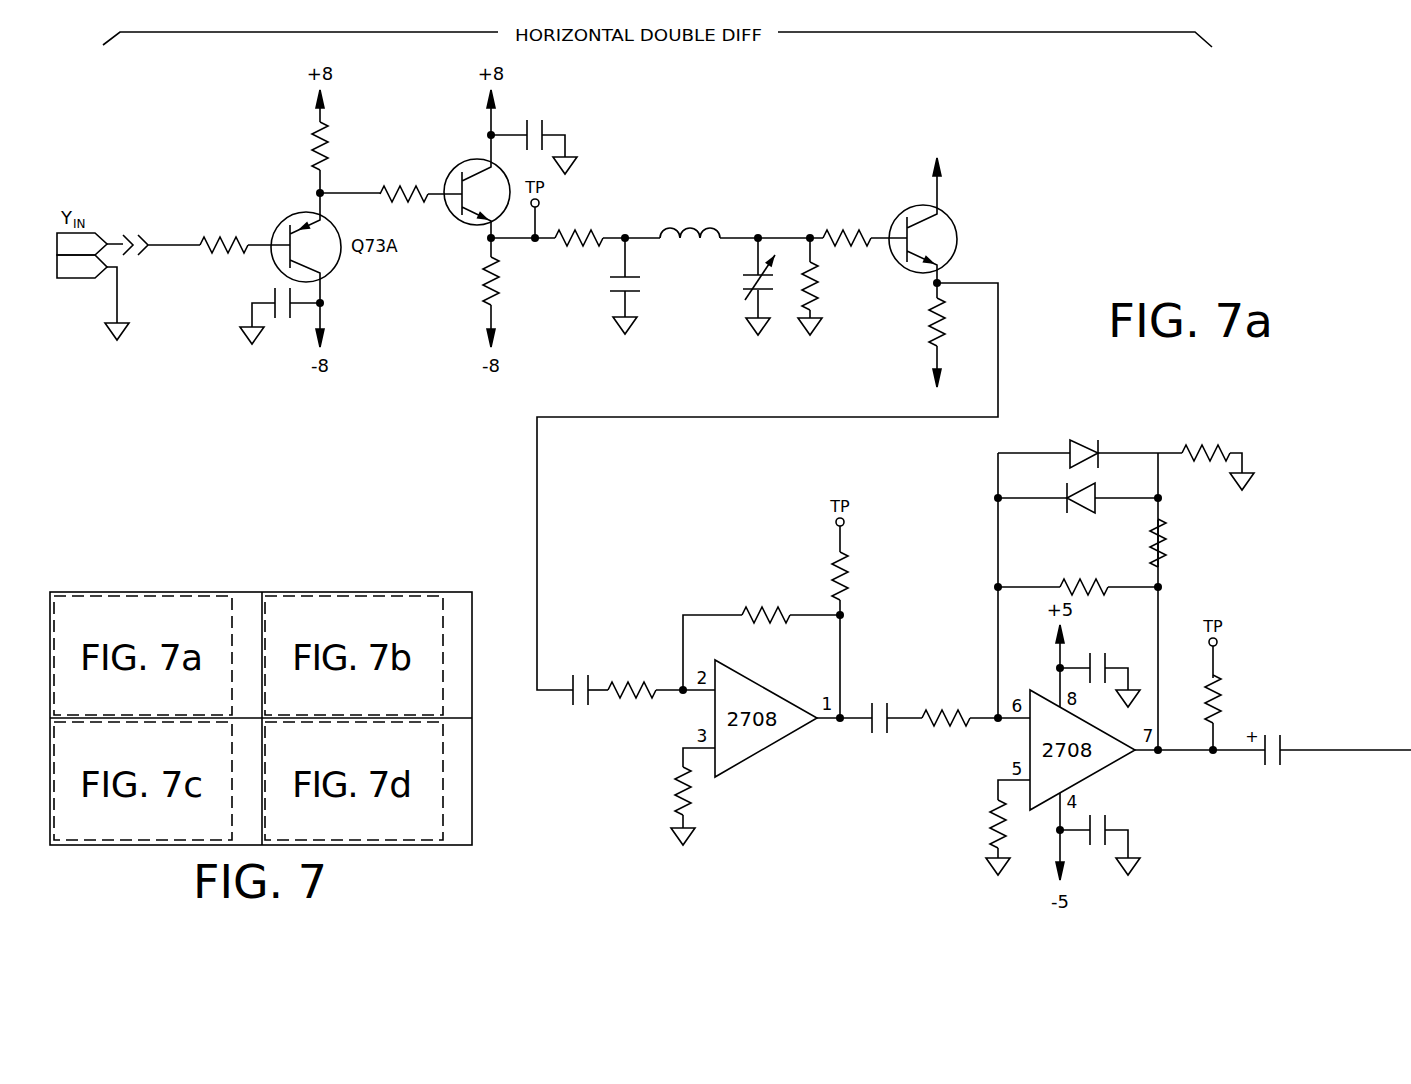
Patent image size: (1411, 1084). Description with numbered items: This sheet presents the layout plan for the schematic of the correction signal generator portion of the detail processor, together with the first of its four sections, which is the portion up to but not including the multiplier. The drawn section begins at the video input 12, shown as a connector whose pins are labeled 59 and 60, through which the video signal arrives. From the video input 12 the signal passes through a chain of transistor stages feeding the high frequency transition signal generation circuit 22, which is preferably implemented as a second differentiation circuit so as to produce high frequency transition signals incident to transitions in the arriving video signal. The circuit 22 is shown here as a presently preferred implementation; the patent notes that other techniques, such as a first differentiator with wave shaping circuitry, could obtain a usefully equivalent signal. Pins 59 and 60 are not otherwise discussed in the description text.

The video input 12 is at (165, 245).
The high frequency transition signal generation circuit 22 is at (996, 170).
The connector pin 59 is at (82, 267).
The connector pin 60 is at (82, 244).